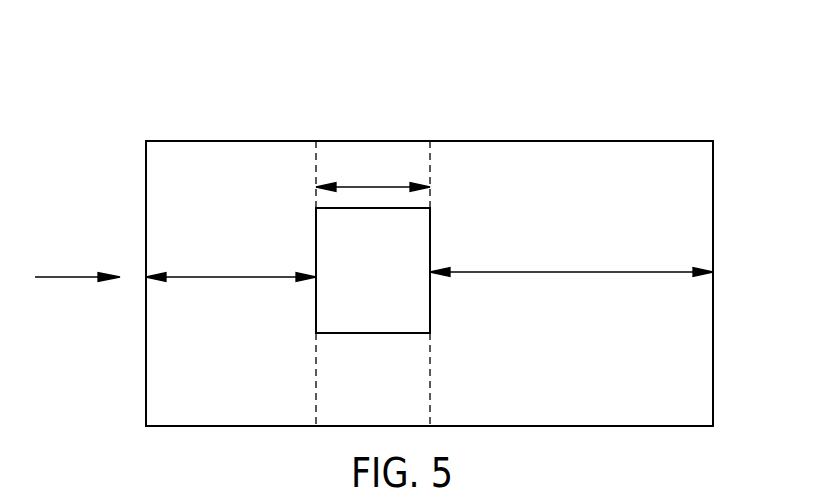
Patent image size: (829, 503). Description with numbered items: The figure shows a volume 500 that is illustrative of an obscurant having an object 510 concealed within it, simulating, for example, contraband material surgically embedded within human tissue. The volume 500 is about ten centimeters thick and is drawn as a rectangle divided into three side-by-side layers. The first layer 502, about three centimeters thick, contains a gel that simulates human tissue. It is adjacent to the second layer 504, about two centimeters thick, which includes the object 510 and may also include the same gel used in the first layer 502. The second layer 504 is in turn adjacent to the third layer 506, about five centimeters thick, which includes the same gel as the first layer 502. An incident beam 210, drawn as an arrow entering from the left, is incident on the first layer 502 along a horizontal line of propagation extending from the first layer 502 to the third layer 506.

The volume 500 is at (457, 220).
The first layer 502 is at (221, 148).
The second layer 504 is at (377, 148).
The third layer 506 is at (570, 148).
The object 510 is at (372, 335).
The incident beam 210 is at (68, 275).